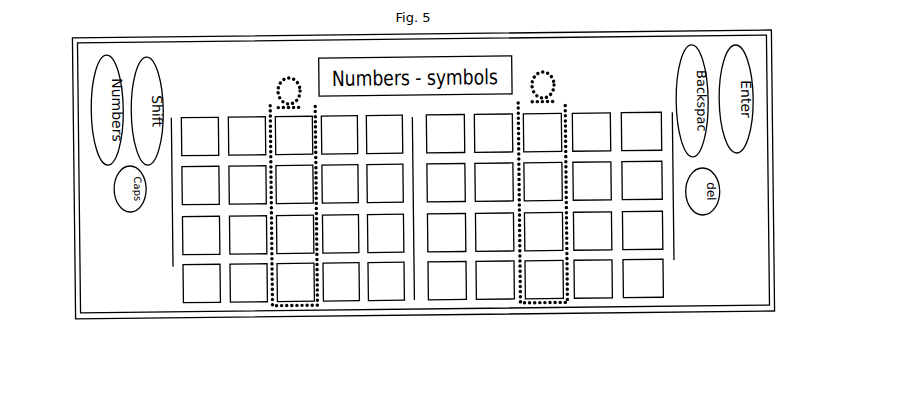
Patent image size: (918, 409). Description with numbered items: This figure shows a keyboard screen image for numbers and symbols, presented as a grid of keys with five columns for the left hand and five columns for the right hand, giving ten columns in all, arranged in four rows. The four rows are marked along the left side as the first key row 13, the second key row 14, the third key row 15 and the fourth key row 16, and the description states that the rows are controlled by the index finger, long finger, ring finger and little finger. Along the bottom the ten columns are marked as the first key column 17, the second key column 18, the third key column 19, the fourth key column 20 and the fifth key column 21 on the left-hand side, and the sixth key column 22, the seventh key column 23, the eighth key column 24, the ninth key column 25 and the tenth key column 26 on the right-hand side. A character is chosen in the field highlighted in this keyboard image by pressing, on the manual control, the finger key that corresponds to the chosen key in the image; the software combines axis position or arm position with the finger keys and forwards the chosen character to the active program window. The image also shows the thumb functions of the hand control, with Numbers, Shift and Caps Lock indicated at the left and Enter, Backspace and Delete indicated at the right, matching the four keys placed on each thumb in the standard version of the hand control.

The first key row 13 is at (182, 136).
The second key row 14 is at (182, 187).
The third key row 15 is at (182, 235).
The fourth key row 16 is at (182, 283).
The first key column 17 is at (204, 300).
The second key column 18 is at (248, 301).
The third key column 19 is at (292, 302).
The fourth key column 20 is at (338, 302).
The fifth key column 21 is at (384, 303).
The sixth key column 22 is at (447, 300).
The seventh key column 23 is at (497, 301).
The eighth key column 24 is at (547, 302).
The ninth key column 25 is at (592, 300).
The tenth key column 26 is at (642, 300).